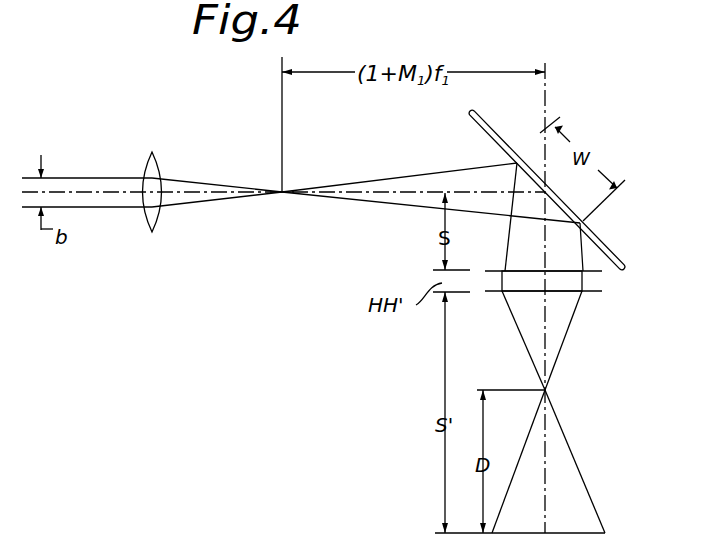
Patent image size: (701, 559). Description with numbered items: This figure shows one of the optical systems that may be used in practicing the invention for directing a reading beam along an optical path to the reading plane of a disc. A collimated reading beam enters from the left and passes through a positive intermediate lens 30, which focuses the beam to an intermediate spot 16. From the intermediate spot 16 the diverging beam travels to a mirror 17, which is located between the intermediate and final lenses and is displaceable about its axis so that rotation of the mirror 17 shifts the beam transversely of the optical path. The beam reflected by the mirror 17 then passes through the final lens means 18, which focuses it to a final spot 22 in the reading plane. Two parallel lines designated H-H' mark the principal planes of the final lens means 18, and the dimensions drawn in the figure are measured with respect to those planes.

The positive intermediate lens 30 is at (158, 156).
The intermediate spot 16 is at (282, 193).
The mirror 17 is at (599, 239).
The final lens means 18 is at (584, 281).
The final spot 22 is at (546, 390).